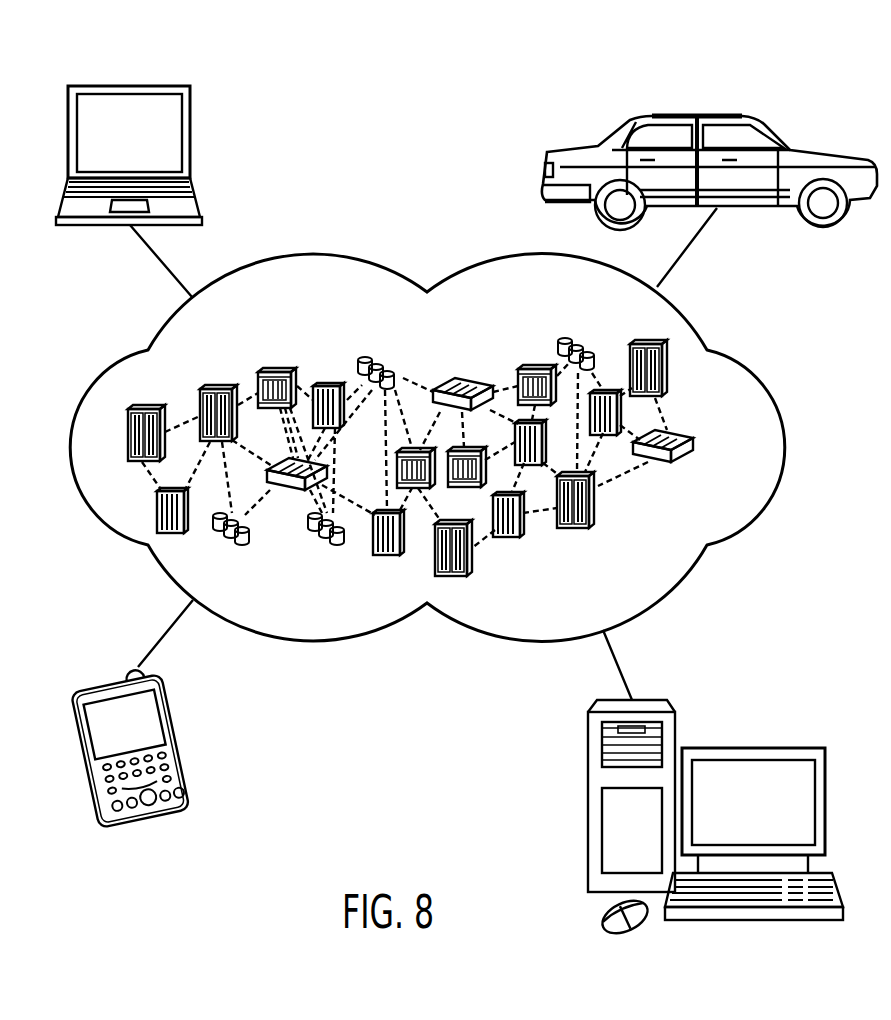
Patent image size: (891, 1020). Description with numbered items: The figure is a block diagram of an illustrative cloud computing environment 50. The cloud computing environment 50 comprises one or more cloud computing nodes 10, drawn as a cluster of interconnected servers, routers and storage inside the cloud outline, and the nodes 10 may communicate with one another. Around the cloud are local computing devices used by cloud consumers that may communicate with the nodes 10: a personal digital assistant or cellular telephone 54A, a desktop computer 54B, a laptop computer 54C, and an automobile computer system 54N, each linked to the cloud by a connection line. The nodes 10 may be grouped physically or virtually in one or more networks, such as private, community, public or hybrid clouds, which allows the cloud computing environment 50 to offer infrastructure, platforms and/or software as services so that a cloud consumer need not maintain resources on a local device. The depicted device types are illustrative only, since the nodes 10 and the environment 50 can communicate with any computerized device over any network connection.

The cloud computing node 10 is at (706, 448).
The cloud computing environment 50 is at (767, 352).
The personal digital assistant or cellular telephone 54A is at (108, 685).
The desktop computer 54B is at (753, 747).
The laptop computer 54C is at (128, 85).
The automobile computer system 54N is at (689, 115).